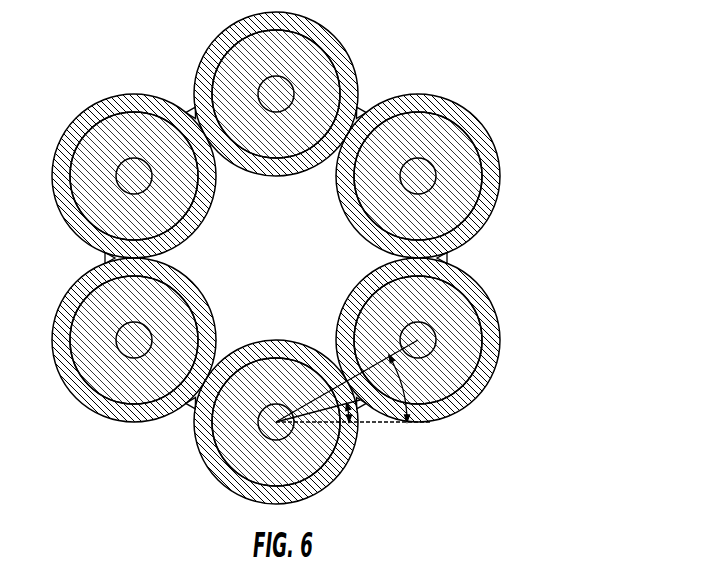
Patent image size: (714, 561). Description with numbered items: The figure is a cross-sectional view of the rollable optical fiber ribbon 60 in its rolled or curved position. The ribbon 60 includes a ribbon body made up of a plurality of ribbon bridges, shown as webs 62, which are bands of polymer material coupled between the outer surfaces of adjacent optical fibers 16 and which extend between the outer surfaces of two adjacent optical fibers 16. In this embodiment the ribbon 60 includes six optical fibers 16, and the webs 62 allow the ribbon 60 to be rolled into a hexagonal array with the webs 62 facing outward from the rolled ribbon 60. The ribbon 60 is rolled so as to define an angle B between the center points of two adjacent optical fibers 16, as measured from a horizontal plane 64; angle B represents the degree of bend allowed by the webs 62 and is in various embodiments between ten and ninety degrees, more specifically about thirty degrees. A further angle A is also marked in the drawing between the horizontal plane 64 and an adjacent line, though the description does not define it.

The rollable optical fiber ribbon 60 is at (332, 273).
The optical fiber 16 is at (308, 57).
The web 62 is at (362, 112).
The horizontal plane 64 is at (373, 422).
The angle A is at (351, 419).
The angle B is at (406, 392).